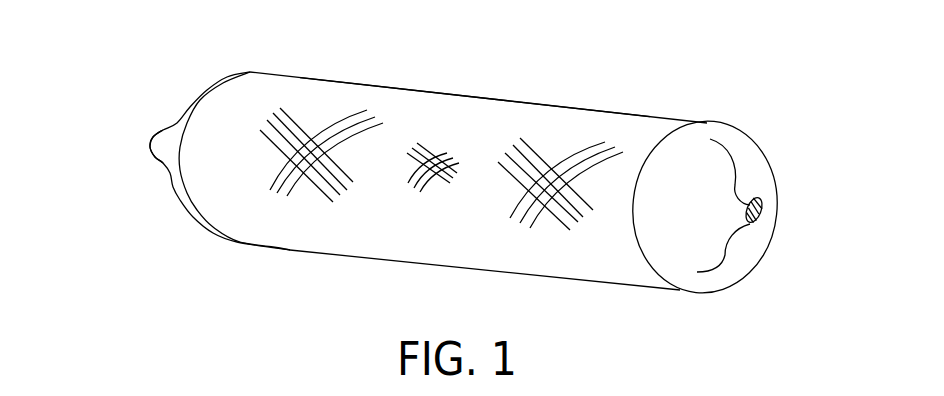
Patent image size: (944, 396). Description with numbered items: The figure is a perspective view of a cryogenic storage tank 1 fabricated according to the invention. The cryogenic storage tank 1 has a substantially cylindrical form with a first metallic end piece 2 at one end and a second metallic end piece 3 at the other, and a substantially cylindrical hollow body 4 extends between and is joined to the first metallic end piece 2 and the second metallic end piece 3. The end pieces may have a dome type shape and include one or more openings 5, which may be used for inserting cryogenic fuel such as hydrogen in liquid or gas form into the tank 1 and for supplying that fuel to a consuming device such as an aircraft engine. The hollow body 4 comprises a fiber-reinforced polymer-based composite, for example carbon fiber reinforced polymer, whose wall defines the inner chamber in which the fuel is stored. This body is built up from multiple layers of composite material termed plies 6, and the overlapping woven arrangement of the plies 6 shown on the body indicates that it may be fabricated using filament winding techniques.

The cryogenic storage tank 1 is at (553, 100).
The first metallic end piece 2 is at (762, 143).
The second metallic end piece 3 is at (157, 127).
The hollow body 4 is at (457, 113).
The openings 5 is at (160, 132).
The plies 6 is at (297, 123).